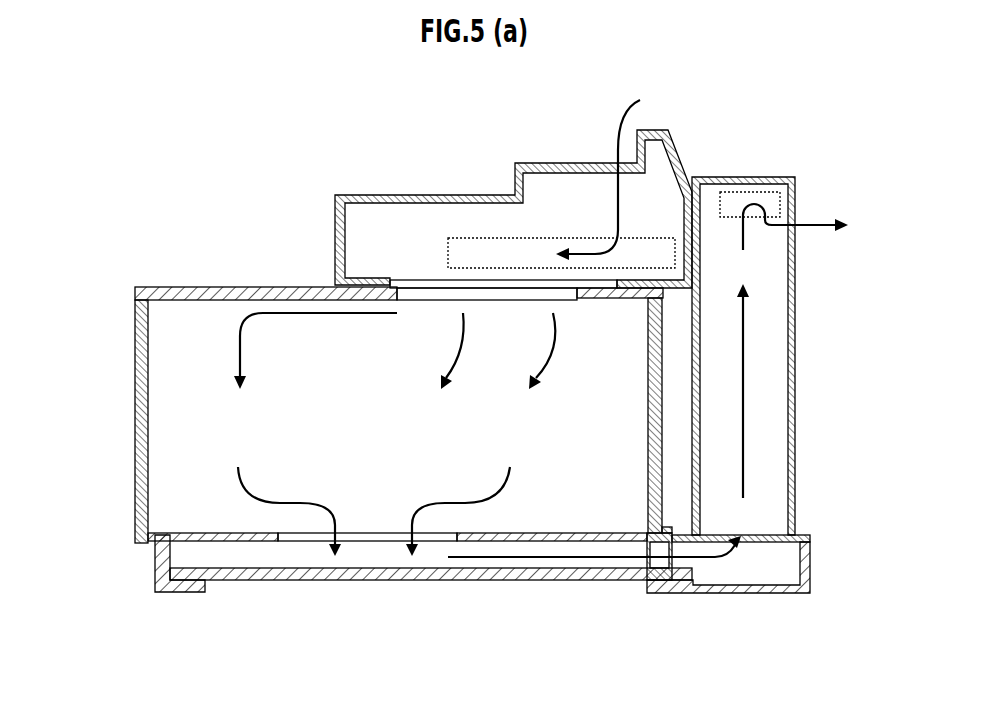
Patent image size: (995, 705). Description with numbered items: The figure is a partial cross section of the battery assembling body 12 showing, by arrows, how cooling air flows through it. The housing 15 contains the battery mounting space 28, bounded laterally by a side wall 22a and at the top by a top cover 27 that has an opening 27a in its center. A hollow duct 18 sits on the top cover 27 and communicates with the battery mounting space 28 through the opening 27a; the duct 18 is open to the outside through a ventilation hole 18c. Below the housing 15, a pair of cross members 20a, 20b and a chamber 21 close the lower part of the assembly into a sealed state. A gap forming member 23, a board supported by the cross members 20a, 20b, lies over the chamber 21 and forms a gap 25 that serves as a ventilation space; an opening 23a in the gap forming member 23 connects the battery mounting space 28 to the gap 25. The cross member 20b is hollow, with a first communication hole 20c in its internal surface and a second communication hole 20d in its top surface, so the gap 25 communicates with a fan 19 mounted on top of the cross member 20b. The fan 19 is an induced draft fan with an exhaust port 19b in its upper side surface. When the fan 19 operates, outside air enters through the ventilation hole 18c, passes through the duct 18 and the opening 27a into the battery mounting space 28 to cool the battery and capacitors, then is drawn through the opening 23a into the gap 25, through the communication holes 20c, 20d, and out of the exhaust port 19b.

The battery assembling body 12 is at (225, 170).
The housing 15 is at (100, 417).
The duct 18 is at (466, 195).
The ventilation hole 18c is at (568, 238).
The fan 19 is at (784, 177).
The exhaust port 19b is at (793, 213).
The chamber 21 is at (333, 580).
The side wall 22a is at (135, 333).
The gap forming member 23 is at (190, 533).
The opening 23a is at (374, 532).
The gap 25 is at (383, 569).
The top cover 27 is at (260, 286).
The opening 27a is at (511, 300).
The battery mounting space 28 is at (387, 430).
The cross member 20a is at (155, 568).
The cross member 20b is at (757, 593).
The first communication hole 20c is at (633, 582).
The second communication hole 20d is at (760, 535).